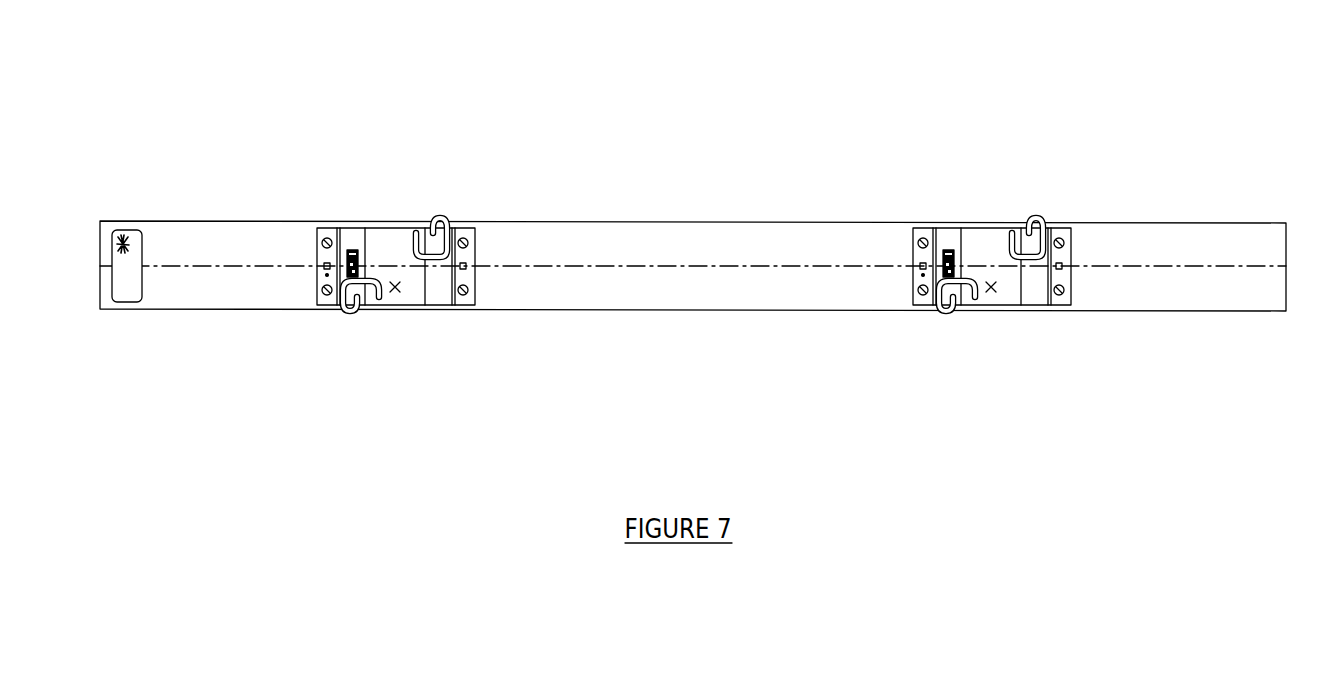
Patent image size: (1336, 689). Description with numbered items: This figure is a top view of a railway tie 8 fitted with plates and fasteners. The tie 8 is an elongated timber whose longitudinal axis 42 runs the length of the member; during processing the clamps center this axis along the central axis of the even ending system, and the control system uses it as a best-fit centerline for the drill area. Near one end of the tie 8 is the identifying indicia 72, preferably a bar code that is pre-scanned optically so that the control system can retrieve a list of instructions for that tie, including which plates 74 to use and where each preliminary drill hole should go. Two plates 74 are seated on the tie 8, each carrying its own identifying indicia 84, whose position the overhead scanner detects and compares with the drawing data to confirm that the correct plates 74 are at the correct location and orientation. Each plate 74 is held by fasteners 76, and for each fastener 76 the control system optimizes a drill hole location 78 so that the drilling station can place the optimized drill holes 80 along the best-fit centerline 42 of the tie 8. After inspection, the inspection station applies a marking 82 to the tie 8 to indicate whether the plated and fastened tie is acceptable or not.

The tie 8 is at (1258, 239).
The longitudinal axis 42 is at (1218, 267).
The identifying indicia 72 is at (141, 236).
The plate 74 is at (990, 243).
The fastener 76 is at (448, 228).
The drill hole location 78 is at (1053, 293).
The drill hole 80 is at (1062, 293).
The marking 82 is at (397, 288).
The identifying indicia on plate 84 is at (350, 249).